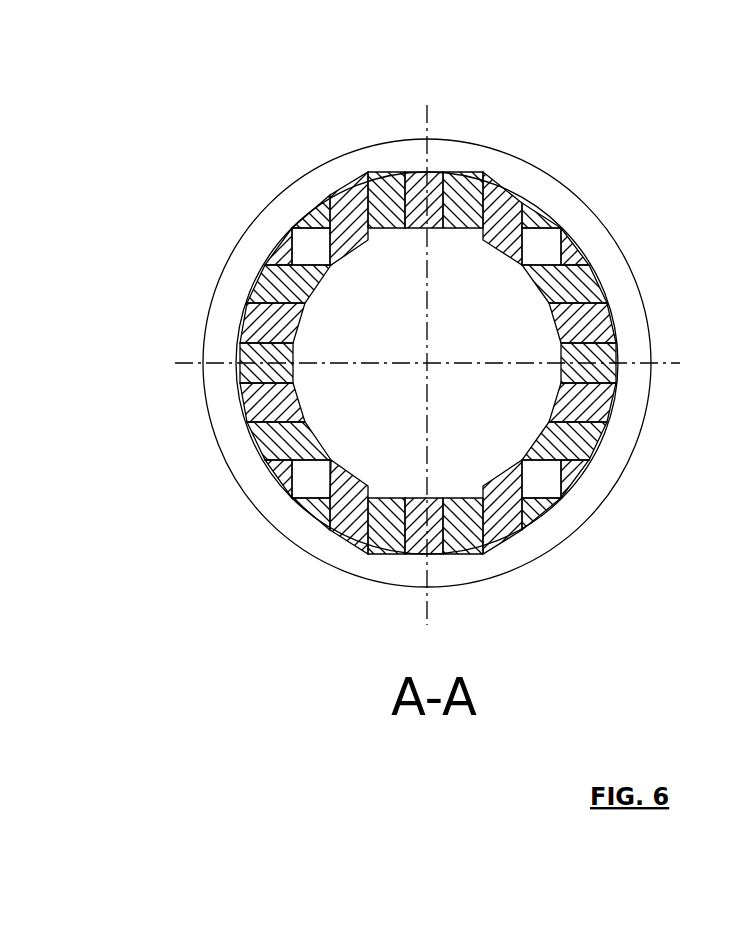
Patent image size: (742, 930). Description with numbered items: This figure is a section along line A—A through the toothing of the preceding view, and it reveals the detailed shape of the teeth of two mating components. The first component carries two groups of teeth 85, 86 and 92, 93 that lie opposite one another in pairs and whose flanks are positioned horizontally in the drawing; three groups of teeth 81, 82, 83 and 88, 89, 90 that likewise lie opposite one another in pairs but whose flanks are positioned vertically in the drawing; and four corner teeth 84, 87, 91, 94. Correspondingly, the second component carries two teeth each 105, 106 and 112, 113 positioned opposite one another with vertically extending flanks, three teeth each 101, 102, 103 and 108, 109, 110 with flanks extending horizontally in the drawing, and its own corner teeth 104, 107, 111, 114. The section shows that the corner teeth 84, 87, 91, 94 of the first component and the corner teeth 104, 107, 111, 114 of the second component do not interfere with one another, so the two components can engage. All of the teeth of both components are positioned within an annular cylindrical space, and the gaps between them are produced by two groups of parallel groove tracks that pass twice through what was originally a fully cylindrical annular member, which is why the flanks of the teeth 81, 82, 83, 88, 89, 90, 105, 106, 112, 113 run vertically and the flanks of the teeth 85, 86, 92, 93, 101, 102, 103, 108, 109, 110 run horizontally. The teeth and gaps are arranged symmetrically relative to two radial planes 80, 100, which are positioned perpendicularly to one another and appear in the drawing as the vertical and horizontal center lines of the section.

The radial plane 80 is at (431, 284).
The radial plane 100 is at (360, 370).
The tooth 81 is at (348, 205).
The tooth 82 is at (418, 185).
The tooth 83 is at (500, 200).
The corner tooth 84 is at (580, 240).
The tooth 85 is at (612, 320).
The tooth 86 is at (615, 410).
The corner tooth 87 is at (585, 478).
The tooth 88 is at (500, 530).
The tooth 89 is at (436, 560).
The tooth 90 is at (358, 530).
The corner tooth 91 is at (300, 487).
The tooth 92 is at (242, 405).
The tooth 93 is at (247, 330).
The corner tooth 94 is at (268, 243).
The tooth 101 is at (612, 293).
The tooth 102 is at (614, 373).
The tooth 103 is at (597, 447).
The corner tooth 104 is at (540, 535).
The tooth 105 is at (465, 545).
The tooth 106 is at (393, 540).
The corner tooth 107 is at (278, 522).
The tooth 108 is at (258, 440).
The tooth 109 is at (237, 375).
The tooth 110 is at (250, 290).
The corner tooth 111 is at (312, 210).
The tooth 112 is at (388, 190).
The tooth 113 is at (457, 192).
The corner tooth 114 is at (542, 212).